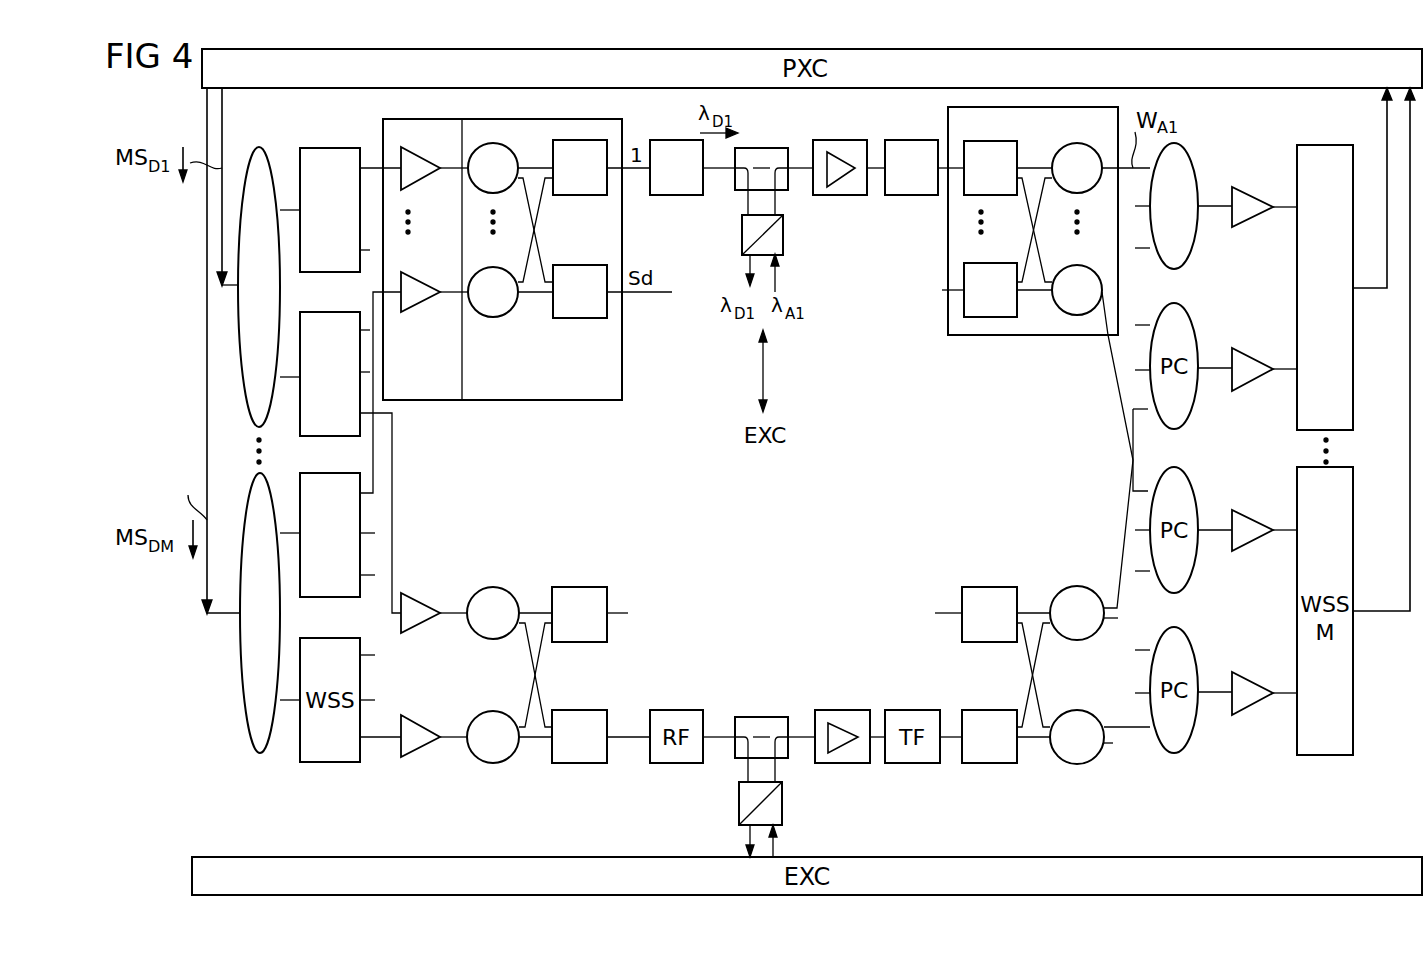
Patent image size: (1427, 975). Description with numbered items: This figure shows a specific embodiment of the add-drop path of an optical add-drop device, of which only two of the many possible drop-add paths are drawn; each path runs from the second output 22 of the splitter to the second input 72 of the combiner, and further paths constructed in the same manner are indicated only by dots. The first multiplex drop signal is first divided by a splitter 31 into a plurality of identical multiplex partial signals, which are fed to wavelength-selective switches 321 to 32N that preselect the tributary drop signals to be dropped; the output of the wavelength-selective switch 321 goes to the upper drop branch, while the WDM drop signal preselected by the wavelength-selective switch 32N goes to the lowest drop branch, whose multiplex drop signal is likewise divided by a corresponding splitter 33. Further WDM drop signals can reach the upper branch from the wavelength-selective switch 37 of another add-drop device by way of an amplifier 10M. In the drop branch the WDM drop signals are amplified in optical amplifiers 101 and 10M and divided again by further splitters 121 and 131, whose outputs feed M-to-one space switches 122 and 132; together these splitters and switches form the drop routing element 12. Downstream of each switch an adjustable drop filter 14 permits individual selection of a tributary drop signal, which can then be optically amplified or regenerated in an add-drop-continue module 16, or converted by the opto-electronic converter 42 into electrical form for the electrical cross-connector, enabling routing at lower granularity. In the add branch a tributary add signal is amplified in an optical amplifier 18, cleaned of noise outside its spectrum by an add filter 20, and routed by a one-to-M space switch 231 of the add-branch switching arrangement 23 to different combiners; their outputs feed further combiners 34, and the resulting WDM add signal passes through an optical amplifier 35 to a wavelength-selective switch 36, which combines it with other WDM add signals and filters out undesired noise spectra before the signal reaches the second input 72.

The second output of the splitter 22 is at (225, 90).
The wavelength-selective switch 321 is at (333, 148).
The wavelength-selective switch 32N is at (362, 423).
The optical amplifier 101 is at (401, 152).
The optical amplifier 10M is at (420, 305).
The drop routing element 12 is at (532, 400).
The splitter 121 is at (478, 190).
The M:1 switch 122 is at (572, 196).
The splitter 131 is at (495, 318).
The M:1 switch 132 is at (580, 318).
The adjustable filter 14 is at (678, 196).
The add-drop-continue module 16 is at (782, 190).
The optical amplifier 18 is at (853, 196).
The filter 20 is at (922, 196).
The opto-electronic converter 42 is at (783, 243).
The add-branch switching arrangement 23 is at (1025, 335).
The 1:M space switch 231 is at (990, 140).
The splitter 31 is at (238, 335).
The power splitter PSM 33 is at (258, 752).
The combiner 34 is at (1193, 163).
The optical amplifier 35 is at (1247, 187).
The wavelength-selective switch 36 is at (1297, 283).
The wavelength-selective switch 37 is at (300, 490).
The second input of the combiner 72 is at (1383, 92).